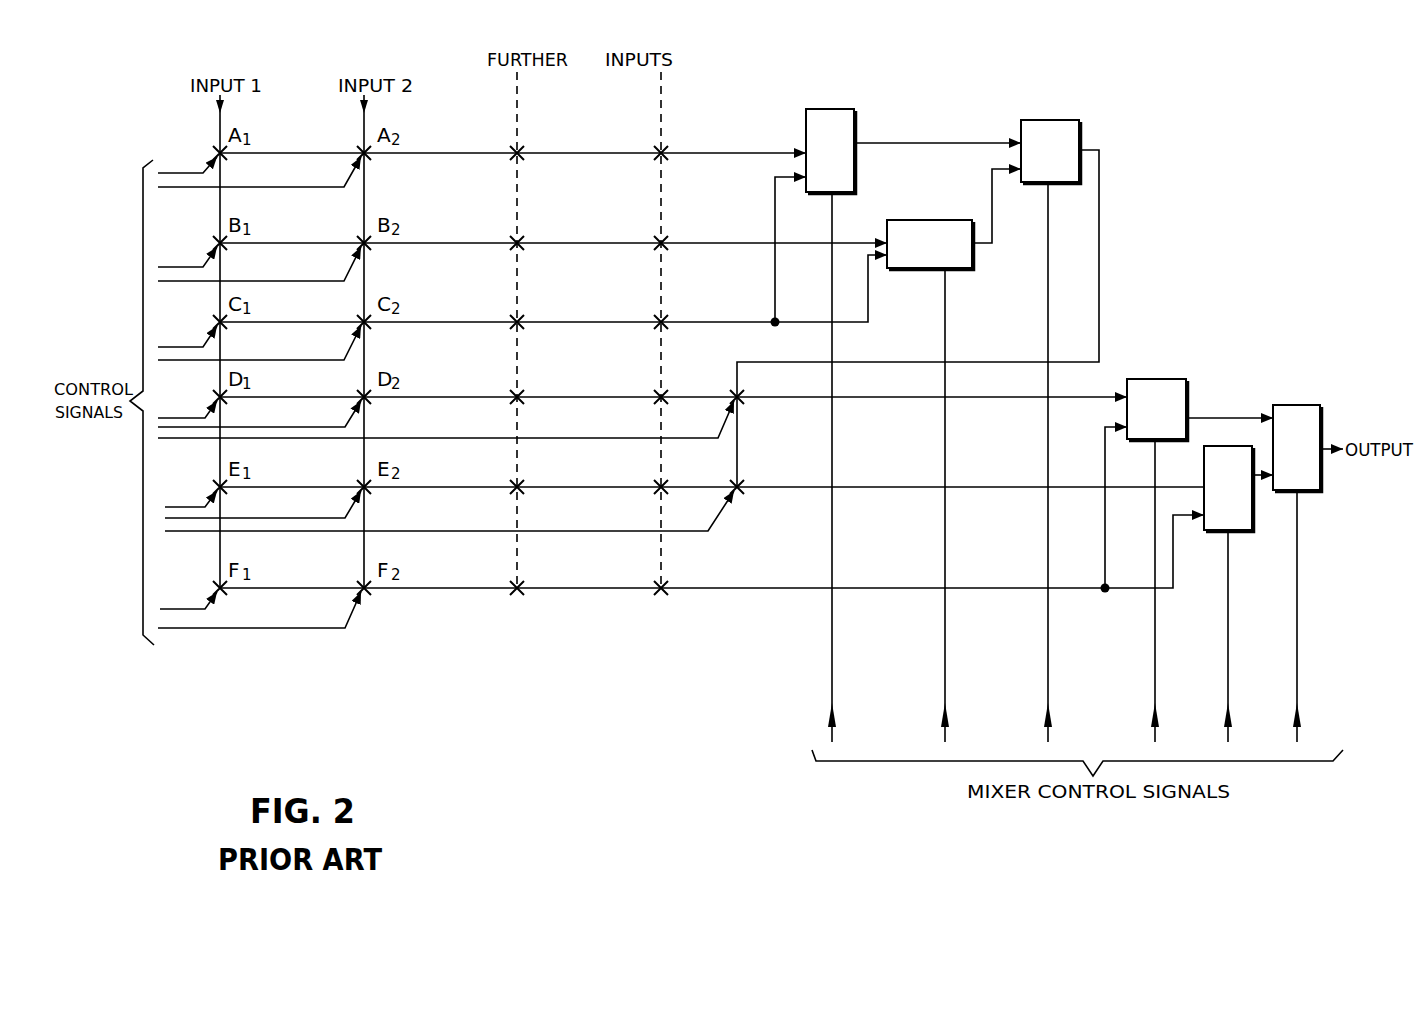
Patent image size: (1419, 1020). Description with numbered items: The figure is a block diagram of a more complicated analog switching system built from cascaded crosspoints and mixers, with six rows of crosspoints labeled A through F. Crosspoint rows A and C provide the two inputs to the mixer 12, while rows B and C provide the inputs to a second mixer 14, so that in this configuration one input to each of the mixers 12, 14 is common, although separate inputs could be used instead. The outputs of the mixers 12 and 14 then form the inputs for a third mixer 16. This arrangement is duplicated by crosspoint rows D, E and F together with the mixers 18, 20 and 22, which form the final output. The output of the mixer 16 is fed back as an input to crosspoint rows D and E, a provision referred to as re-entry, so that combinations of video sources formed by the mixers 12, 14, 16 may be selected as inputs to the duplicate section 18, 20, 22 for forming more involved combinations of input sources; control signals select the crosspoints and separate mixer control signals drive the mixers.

The mixer 12 is at (836, 113).
The second mixer 14 is at (932, 224).
The third mixer 16 is at (1060, 127).
The mixer 18 is at (1188, 393).
The mixer 20 is at (1204, 462).
The mixer 22 is at (1303, 408).